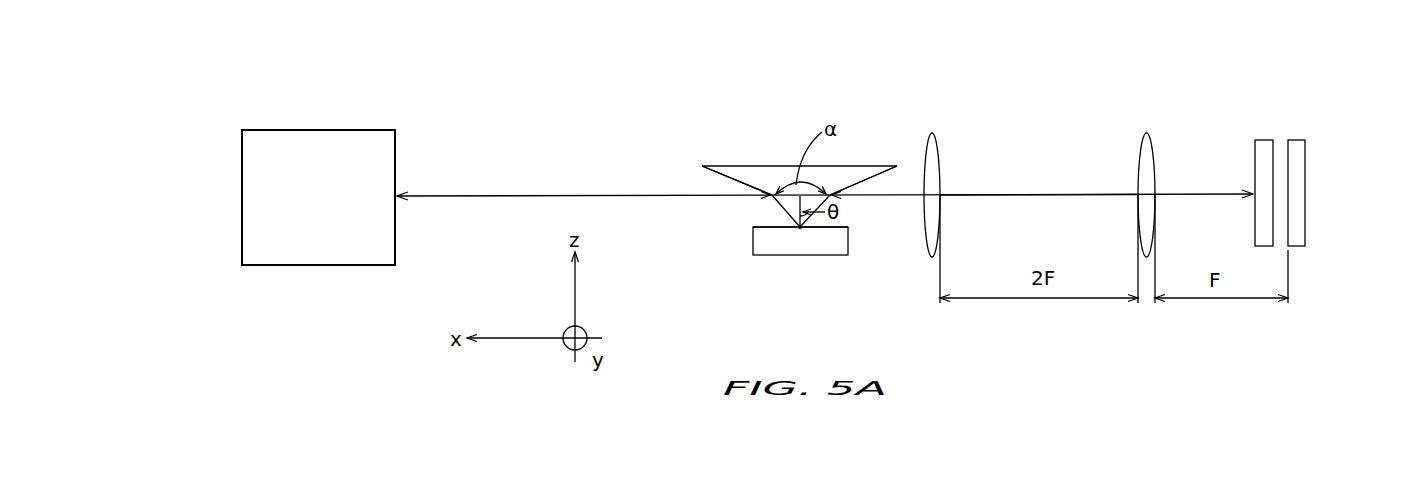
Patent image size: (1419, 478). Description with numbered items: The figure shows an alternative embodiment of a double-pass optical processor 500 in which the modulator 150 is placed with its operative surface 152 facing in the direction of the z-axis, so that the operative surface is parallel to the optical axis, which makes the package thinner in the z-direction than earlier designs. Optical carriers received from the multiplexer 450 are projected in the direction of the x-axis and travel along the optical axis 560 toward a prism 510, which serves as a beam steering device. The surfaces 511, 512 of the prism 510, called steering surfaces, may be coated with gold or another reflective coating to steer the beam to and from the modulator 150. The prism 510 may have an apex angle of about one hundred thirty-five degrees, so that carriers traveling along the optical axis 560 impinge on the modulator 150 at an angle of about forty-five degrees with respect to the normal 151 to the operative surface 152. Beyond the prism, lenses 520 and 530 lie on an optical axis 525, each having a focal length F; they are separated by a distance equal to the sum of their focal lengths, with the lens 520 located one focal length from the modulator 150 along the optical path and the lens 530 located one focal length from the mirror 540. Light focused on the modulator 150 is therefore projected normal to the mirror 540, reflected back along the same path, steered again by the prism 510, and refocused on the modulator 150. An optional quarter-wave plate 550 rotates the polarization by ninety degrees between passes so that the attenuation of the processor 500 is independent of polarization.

The double-pass optical processor 500 is at (330, 98).
The multiplexer 450 is at (370, 130).
The optical axis 560 is at (505, 196).
The prism 510 is at (787, 163).
The steering surface of prism 511 is at (740, 181).
The steering surface of prism 512 is at (853, 185).
The modulator 150 is at (783, 257).
The normal to the operative surface 151 is at (800, 227).
The operative surface 152 is at (787, 219).
The lens 520 is at (932, 133).
The lens 530 is at (1147, 133).
The optical axis 525 is at (1073, 195).
The quarter-wave plate 550 is at (1265, 138).
The mirror 540 is at (1298, 247).